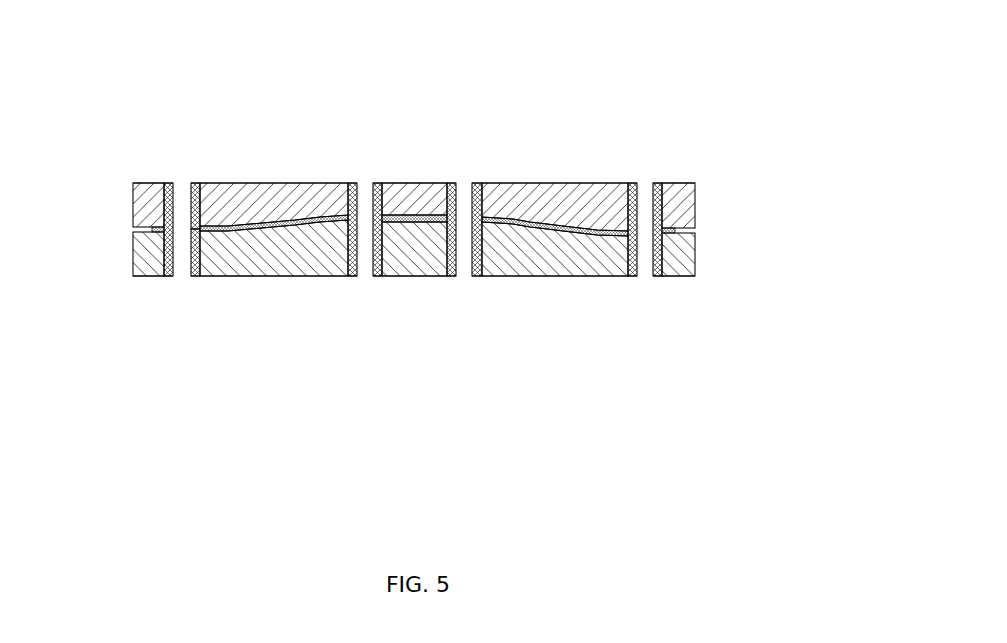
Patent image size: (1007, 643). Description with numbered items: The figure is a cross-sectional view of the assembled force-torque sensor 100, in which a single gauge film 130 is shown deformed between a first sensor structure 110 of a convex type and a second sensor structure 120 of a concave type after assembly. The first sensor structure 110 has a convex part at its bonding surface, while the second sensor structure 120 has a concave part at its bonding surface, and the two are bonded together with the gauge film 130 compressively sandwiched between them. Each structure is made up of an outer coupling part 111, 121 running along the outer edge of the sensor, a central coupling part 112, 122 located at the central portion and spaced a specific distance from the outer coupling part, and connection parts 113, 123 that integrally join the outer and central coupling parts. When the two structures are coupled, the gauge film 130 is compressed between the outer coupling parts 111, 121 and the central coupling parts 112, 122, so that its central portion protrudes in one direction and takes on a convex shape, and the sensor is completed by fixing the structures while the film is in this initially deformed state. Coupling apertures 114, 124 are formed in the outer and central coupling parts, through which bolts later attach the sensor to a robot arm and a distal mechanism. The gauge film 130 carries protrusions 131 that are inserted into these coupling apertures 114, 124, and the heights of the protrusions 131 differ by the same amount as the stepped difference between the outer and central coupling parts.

The force-torque sensor 100 is at (665, 138).
The first sensor structure 110 is at (708, 253).
The outer coupling part 111 is at (134, 255).
The central coupling part 112 is at (417, 277).
The connection part 113 is at (292, 257).
The coupling aperture 114 is at (173, 262).
The second sensor structure 120 is at (708, 202).
The outer coupling part 121 is at (143, 184).
The central coupling part 122 is at (413, 183).
The connection part 123 is at (283, 203).
The coupling aperture 124 is at (192, 185).
The gauge film 130 is at (544, 205).
The protrusion 131 is at (196, 262).